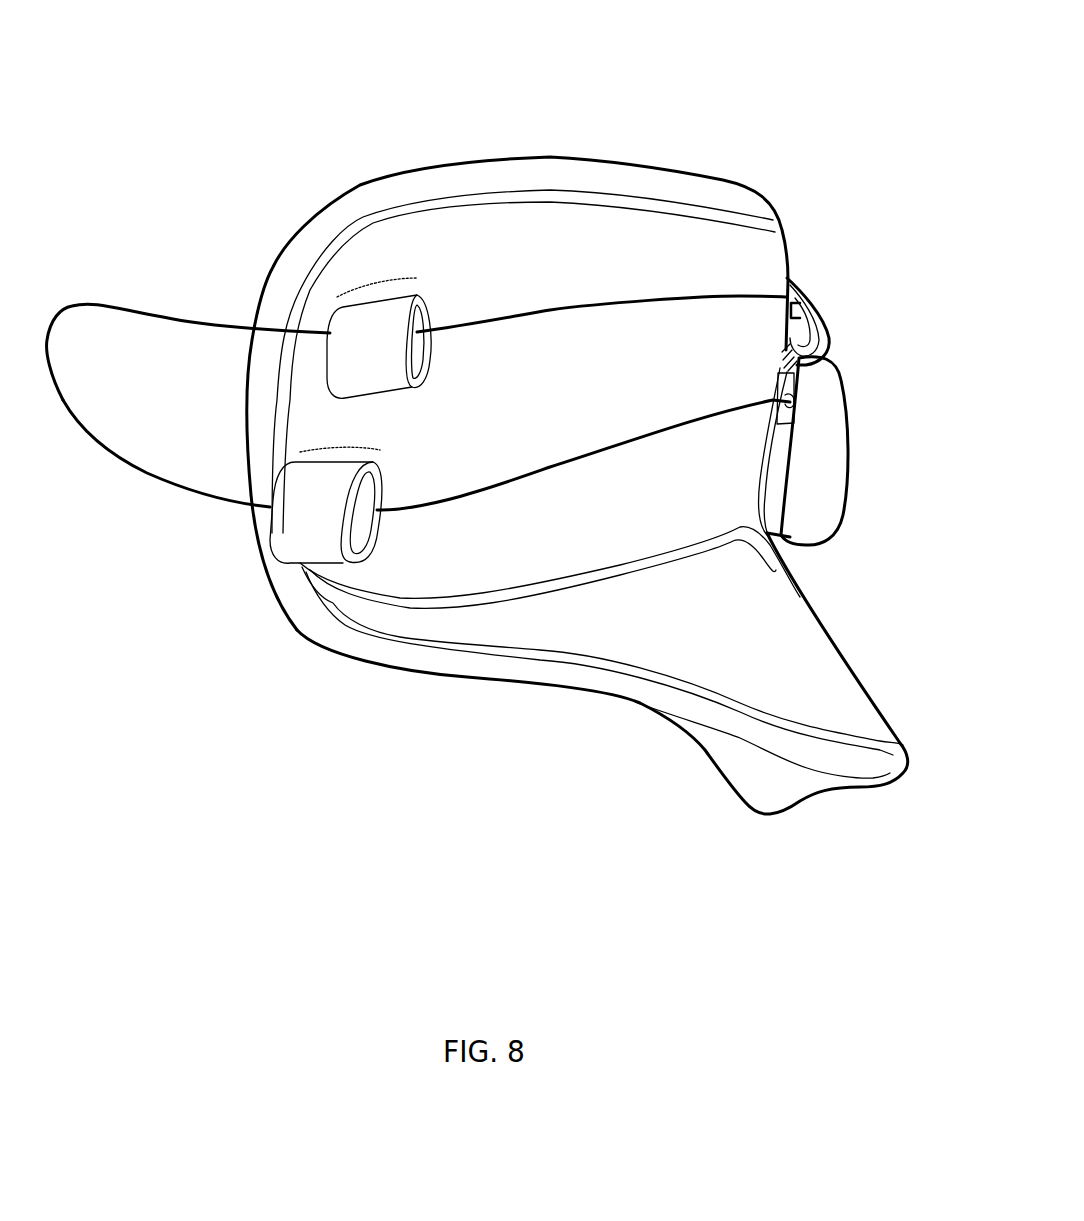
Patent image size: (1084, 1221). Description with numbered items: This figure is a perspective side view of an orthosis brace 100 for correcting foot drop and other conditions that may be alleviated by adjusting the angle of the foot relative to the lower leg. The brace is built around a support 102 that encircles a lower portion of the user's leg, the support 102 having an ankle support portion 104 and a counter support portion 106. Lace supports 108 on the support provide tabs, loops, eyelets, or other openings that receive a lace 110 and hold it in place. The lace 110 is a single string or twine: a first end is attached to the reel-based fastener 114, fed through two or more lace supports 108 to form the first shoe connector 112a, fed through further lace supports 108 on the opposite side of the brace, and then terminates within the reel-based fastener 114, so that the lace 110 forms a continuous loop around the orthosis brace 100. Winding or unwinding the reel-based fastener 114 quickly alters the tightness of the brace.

The orthosis brace 100 is at (271, 63).
The support 102 is at (298, 627).
The ankle support portion 104 is at (513, 527).
The counter support portion 106 is at (755, 770).
The lace supports 108 is at (353, 320).
The lace 110 is at (726, 411).
The first shoe connector 112a is at (67, 305).
The reel-based fastener 114 is at (815, 440).